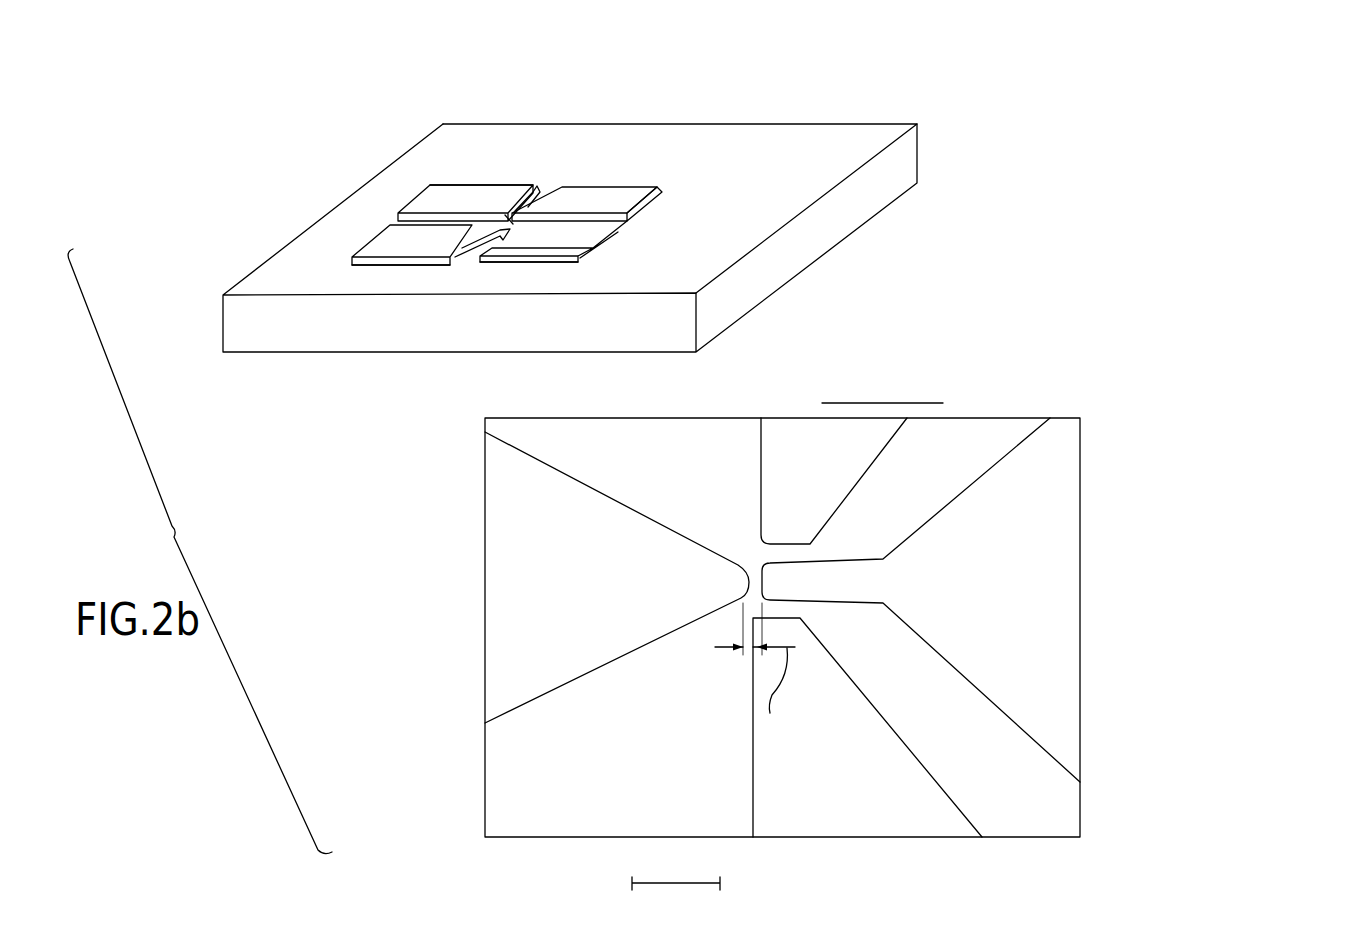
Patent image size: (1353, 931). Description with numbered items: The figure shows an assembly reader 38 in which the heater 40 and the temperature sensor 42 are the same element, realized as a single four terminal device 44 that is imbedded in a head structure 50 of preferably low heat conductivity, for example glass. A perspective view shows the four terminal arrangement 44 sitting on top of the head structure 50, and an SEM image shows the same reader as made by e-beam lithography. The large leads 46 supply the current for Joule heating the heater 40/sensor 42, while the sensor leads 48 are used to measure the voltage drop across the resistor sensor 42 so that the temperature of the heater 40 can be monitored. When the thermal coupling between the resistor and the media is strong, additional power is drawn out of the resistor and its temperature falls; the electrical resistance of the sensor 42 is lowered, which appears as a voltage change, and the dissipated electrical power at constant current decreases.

The assembly reader 38 is at (181, 88).
The heater 40 is at (507, 218).
The temperature sensor 42 is at (593, 409).
The four terminal device 44 is at (382, 213).
The large leads 46 is at (438, 205).
The sensor leads 48 is at (968, 697).
The head structure 50 is at (477, 352).